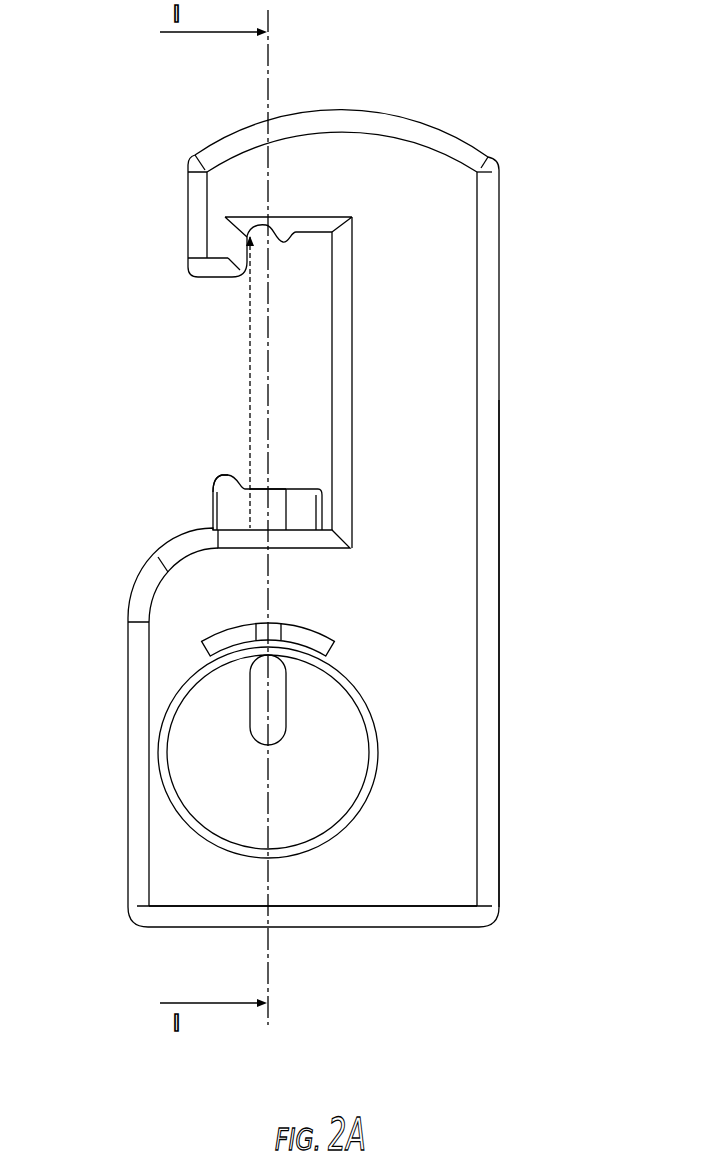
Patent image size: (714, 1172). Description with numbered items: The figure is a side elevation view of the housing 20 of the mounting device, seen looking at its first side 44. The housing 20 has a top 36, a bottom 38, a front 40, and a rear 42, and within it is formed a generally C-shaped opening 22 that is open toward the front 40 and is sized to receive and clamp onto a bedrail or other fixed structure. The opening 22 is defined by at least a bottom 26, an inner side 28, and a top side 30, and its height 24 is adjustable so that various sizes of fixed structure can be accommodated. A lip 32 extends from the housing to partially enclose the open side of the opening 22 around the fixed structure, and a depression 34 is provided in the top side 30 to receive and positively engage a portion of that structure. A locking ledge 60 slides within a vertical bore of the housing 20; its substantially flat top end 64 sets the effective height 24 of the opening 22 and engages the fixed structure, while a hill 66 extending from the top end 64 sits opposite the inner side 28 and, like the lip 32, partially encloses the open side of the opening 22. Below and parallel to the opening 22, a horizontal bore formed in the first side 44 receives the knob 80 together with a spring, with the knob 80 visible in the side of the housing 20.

The housing 20 is at (506, 385).
The opening 22 is at (226, 367).
The height 24 is at (250, 398).
The bottom 26 is at (307, 527).
The inner side 28 is at (326, 306).
The top side 30 is at (303, 232).
The lip 32 is at (214, 277).
The depression 34 is at (297, 231).
The top 36 is at (360, 111).
The bottom 38 is at (341, 927).
The front 40 is at (128, 673).
The rear 42 is at (500, 538).
The first side 44 is at (441, 695).
The locking ledge 60 is at (302, 479).
The top end 64 is at (250, 480).
The hill 66 is at (228, 474).
The knob 80 is at (240, 798).